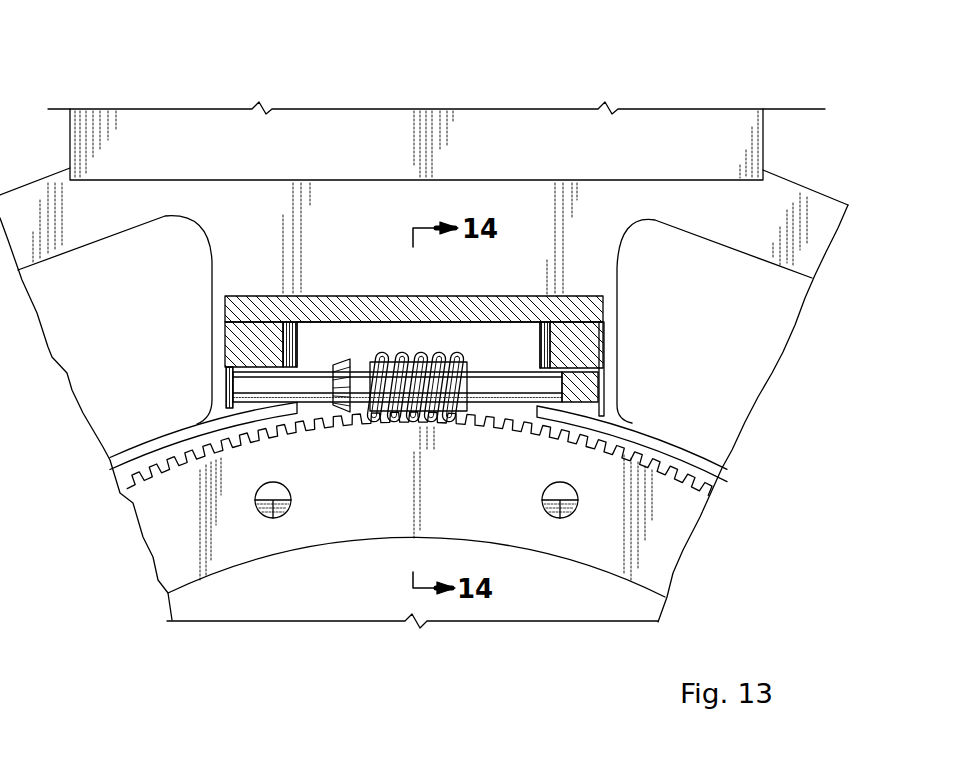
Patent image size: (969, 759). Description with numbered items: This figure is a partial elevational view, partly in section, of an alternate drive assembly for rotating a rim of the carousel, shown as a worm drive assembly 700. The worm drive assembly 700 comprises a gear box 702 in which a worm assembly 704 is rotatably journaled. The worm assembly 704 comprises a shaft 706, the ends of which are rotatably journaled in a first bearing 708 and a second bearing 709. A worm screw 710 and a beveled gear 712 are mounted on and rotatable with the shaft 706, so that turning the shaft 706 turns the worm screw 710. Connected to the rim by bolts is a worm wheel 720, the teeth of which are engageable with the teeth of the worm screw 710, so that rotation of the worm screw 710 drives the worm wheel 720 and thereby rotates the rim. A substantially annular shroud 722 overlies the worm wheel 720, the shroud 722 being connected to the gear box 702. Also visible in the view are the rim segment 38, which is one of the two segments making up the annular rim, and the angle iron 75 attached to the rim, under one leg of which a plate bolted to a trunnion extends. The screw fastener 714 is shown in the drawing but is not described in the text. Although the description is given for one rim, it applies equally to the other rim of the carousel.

The angle iron 75 is at (155, 123).
The worm drive assembly 700 is at (357, 278).
The second segment of rim 38 is at (818, 228).
The gear box 702 is at (587, 323).
The worm assembly 704 is at (504, 346).
The shaft 706 is at (308, 378).
The bearing 708 is at (580, 402).
The bearing 709 is at (247, 398).
The worm screw 710 is at (440, 410).
The beveled gear 712 is at (338, 362).
The fastening screw 714 is at (267, 518).
The worm wheel 720 is at (680, 514).
The shroud 722 is at (658, 440).